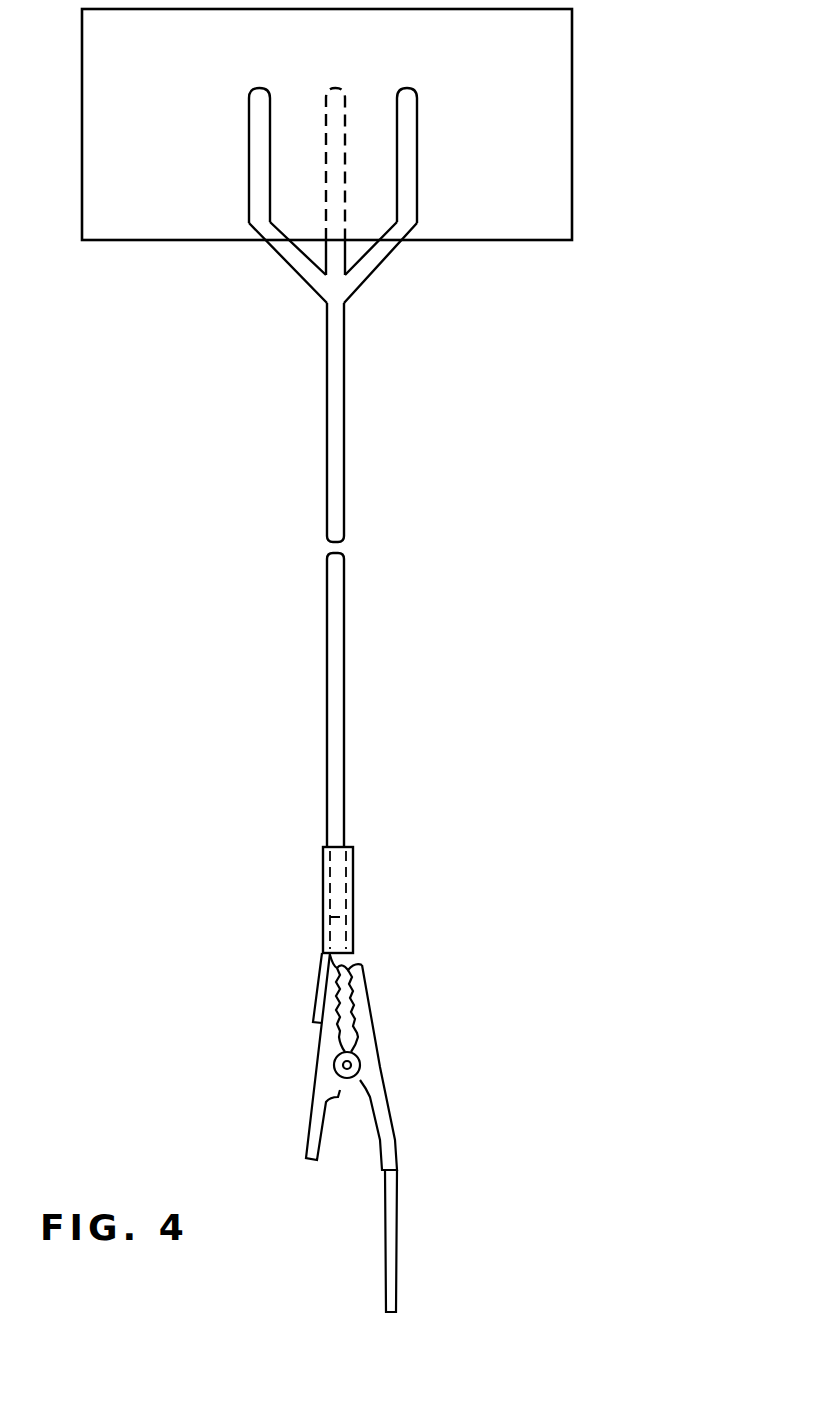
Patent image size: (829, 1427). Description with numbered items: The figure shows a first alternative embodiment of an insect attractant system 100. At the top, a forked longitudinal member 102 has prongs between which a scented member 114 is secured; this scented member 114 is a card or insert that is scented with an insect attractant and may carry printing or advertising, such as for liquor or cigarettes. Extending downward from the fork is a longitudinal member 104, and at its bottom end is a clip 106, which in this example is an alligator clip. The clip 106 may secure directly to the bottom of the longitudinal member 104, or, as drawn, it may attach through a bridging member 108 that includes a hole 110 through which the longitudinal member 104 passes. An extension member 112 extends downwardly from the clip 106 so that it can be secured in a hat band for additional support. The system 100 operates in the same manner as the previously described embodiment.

The insect attractant system 100 is at (510, 487).
The forked longitudinal member 102 is at (387, 257).
The longitudinal member 104 is at (337, 625).
The clip 106 is at (368, 1057).
The bridging member 108 is at (353, 903).
The hole 110 is at (350, 875).
The extension member 112 is at (397, 1272).
The scented member 114 is at (518, 120).